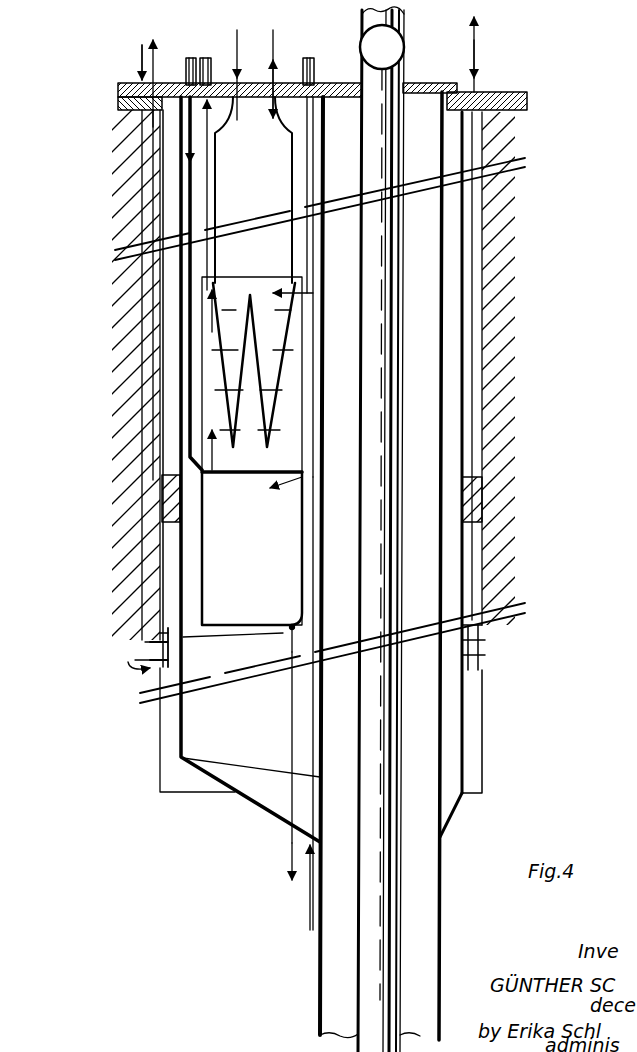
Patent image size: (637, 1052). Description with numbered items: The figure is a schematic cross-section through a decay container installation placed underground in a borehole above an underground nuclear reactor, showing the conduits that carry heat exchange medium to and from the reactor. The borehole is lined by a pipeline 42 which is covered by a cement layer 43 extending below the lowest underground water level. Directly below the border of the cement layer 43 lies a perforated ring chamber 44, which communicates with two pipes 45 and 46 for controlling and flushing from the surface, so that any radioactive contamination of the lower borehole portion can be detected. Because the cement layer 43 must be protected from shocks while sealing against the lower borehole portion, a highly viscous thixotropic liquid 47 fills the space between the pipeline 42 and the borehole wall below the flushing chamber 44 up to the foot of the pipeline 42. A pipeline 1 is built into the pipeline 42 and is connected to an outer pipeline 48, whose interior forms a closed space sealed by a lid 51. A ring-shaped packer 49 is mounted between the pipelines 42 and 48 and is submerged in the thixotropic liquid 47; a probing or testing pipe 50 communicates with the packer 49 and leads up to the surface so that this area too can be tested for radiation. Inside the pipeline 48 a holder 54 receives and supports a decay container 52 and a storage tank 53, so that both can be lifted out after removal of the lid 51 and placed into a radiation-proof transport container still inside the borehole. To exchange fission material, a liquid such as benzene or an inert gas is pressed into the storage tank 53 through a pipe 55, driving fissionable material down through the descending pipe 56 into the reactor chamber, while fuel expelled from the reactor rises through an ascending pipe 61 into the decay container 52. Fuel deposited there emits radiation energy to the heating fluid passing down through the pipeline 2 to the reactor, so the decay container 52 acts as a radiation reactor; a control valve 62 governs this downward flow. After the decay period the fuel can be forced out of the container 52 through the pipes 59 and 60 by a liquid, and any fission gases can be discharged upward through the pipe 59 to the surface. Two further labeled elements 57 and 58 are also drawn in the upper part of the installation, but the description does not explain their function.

The pipeline 1 is at (440, 928).
The pipeline 2 is at (372, 1005).
The pipeline 42 is at (485, 228).
The cement layer 43 is at (505, 324).
The perforated ring chamber 44 is at (150, 655).
The pipe 45 is at (138, 68).
The pipe 46 is at (150, 153).
The thixotropic liquid 47 is at (492, 650).
The outer pipeline 48 is at (172, 352).
The ring-shaped packer 49 is at (490, 514).
The probing or testing pipe 50 is at (485, 265).
The lid 51 is at (527, 92).
The decay container 52 is at (238, 292).
The storage tank 53 is at (273, 614).
The holder 54 is at (240, 632).
The pipe 55 is at (310, 58).
The descending pipe 56 is at (290, 845).
The vessel 57 is at (262, 142).
The inlet line 58 is at (232, 178).
The pipe 59 is at (205, 58).
The pipe 60 is at (188, 62).
The ascending pipe 61 is at (310, 908).
The control valve 62 is at (405, 50).